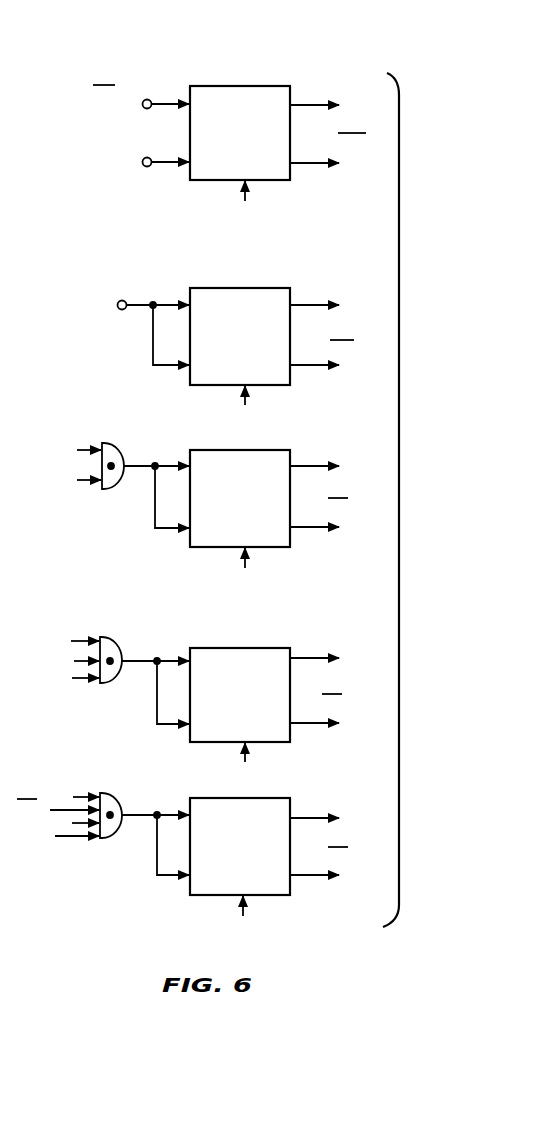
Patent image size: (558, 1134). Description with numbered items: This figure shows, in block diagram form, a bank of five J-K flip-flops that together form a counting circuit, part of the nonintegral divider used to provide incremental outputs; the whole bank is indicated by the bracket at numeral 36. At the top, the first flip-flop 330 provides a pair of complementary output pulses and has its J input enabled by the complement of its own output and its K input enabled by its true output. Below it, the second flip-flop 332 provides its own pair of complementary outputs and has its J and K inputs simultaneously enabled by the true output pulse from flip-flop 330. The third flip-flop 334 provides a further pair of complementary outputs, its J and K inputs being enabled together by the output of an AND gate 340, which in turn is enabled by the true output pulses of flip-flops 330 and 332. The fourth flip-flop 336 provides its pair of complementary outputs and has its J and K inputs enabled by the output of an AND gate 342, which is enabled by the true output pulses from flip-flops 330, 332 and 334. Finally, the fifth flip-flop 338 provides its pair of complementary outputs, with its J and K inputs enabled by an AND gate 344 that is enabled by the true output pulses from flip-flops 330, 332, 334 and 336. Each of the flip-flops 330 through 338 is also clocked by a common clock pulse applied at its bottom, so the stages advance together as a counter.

The counter circuit 36 is at (222, 67).
The F155 flip-flop 330 is at (290, 68).
The F156 flip-flop 332 is at (268, 295).
The F157 flip-flop 334 is at (273, 453).
The F158 flip-flop 336 is at (263, 653).
The F159 flip-flop 338 is at (273, 802).
The AND gate 340 is at (118, 447).
The AND gate 342 is at (118, 637).
The AND gate 344 is at (113, 803).